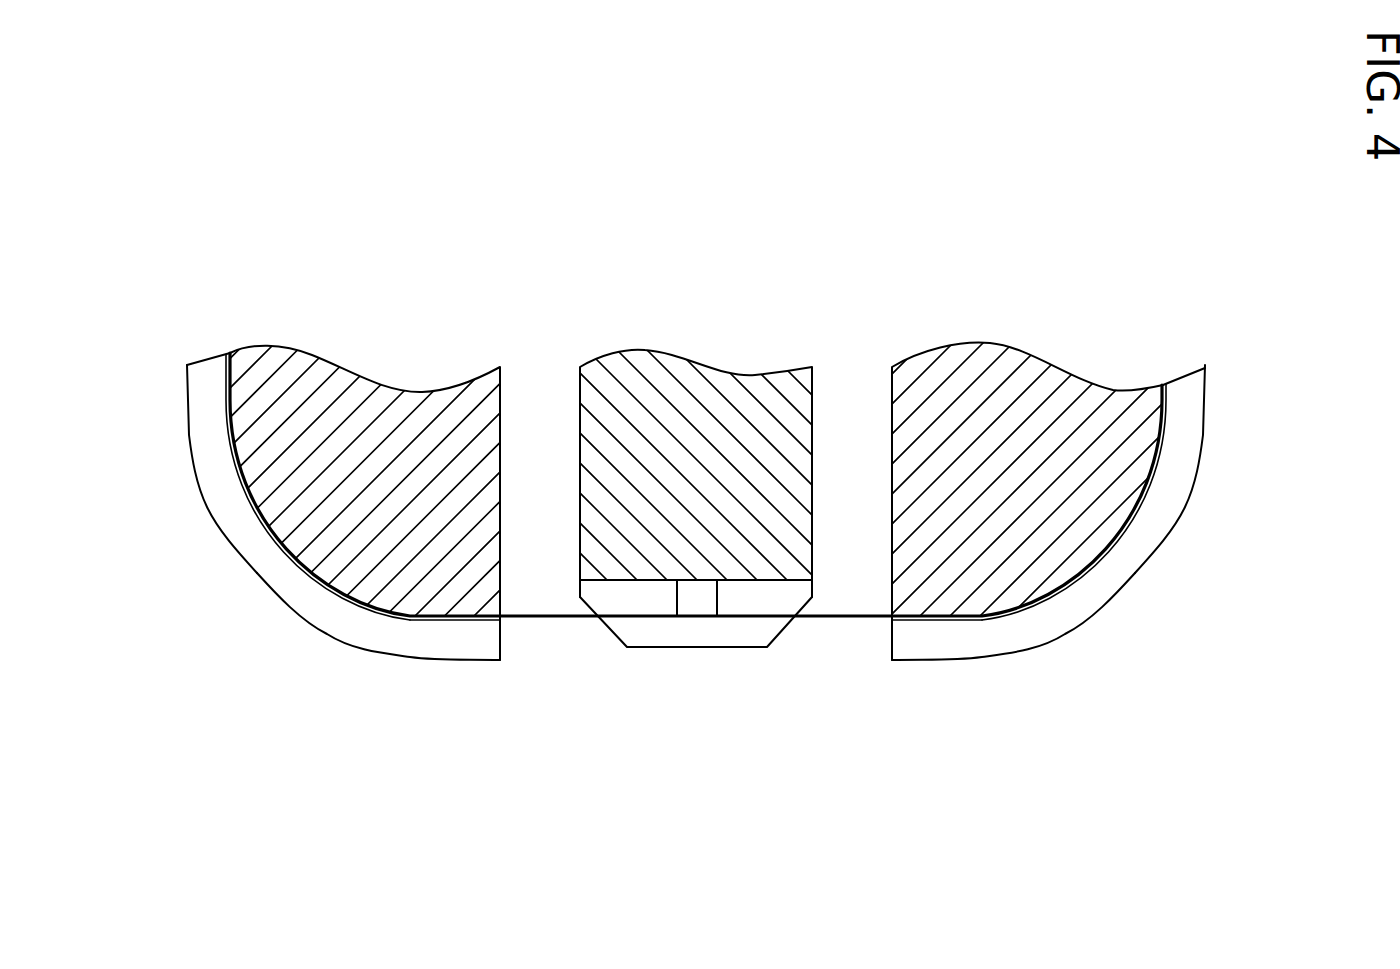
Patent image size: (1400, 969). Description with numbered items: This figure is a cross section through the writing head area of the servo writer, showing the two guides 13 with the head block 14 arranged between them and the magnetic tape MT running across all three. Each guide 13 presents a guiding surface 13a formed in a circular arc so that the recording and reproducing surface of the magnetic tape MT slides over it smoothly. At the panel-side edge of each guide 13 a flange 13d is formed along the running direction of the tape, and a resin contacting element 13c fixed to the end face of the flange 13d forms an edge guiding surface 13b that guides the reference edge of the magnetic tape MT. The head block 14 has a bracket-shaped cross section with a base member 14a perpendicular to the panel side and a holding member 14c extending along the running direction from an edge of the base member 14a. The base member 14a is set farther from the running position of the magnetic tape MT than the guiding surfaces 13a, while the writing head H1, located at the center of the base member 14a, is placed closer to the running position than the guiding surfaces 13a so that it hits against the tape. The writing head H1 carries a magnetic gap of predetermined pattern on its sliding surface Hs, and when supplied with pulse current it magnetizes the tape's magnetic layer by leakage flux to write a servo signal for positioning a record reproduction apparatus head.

The guide 13 is at (158, 442).
The guiding surface 13a is at (462, 621).
The edge guiding surface 13b is at (363, 624).
The resin contacting element 13c is at (277, 577).
The flange 13d is at (203, 508).
The magnetic tape MT is at (230, 388).
The head block 14 is at (588, 642).
The base member 14a is at (747, 497).
The holding member 14c is at (647, 633).
The writing head H1 is at (722, 598).
The sliding surface Hs is at (695, 620).